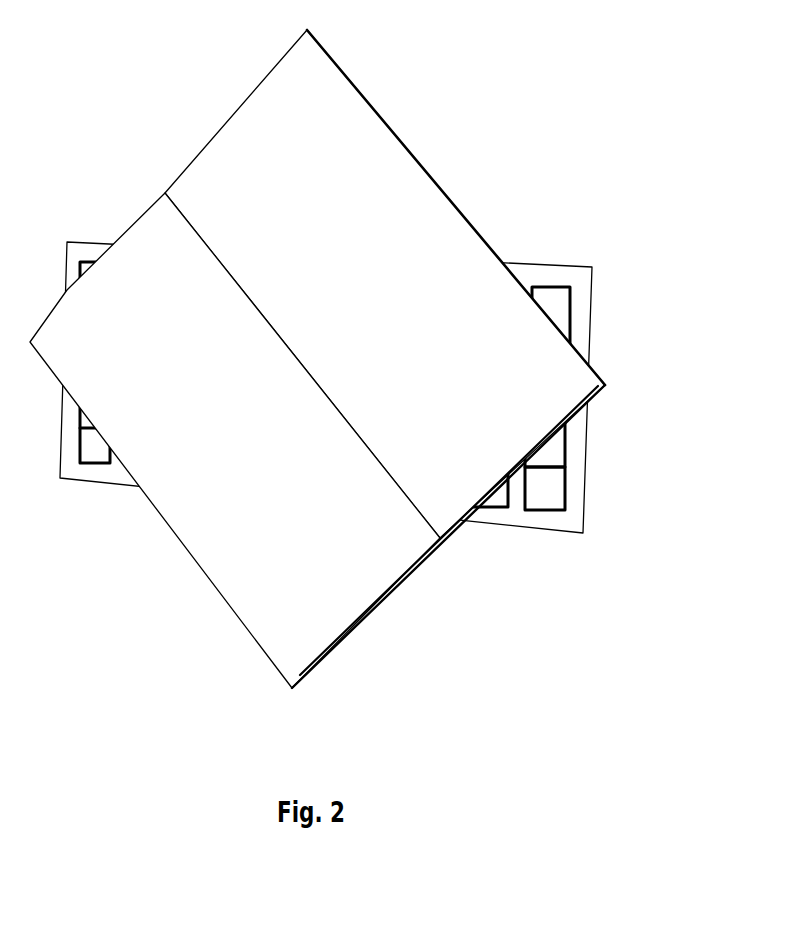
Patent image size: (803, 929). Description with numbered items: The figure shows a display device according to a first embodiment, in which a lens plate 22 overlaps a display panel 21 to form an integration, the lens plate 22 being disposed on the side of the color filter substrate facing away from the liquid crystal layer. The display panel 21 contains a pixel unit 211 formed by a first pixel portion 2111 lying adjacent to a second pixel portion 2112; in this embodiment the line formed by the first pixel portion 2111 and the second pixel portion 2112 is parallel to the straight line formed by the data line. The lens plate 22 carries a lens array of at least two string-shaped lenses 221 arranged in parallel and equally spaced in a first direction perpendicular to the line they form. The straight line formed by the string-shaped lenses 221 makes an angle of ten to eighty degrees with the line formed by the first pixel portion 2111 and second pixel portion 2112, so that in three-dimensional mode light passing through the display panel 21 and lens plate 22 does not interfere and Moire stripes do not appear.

The display panel 21 is at (405, 358).
The pixel unit 211 is at (637, 455).
The first pixel portion 2111 is at (566, 453).
The second pixel portion 2112 is at (566, 492).
The lens plate 22 is at (311, 359).
The string-shaped lenses 221 is at (220, 120).